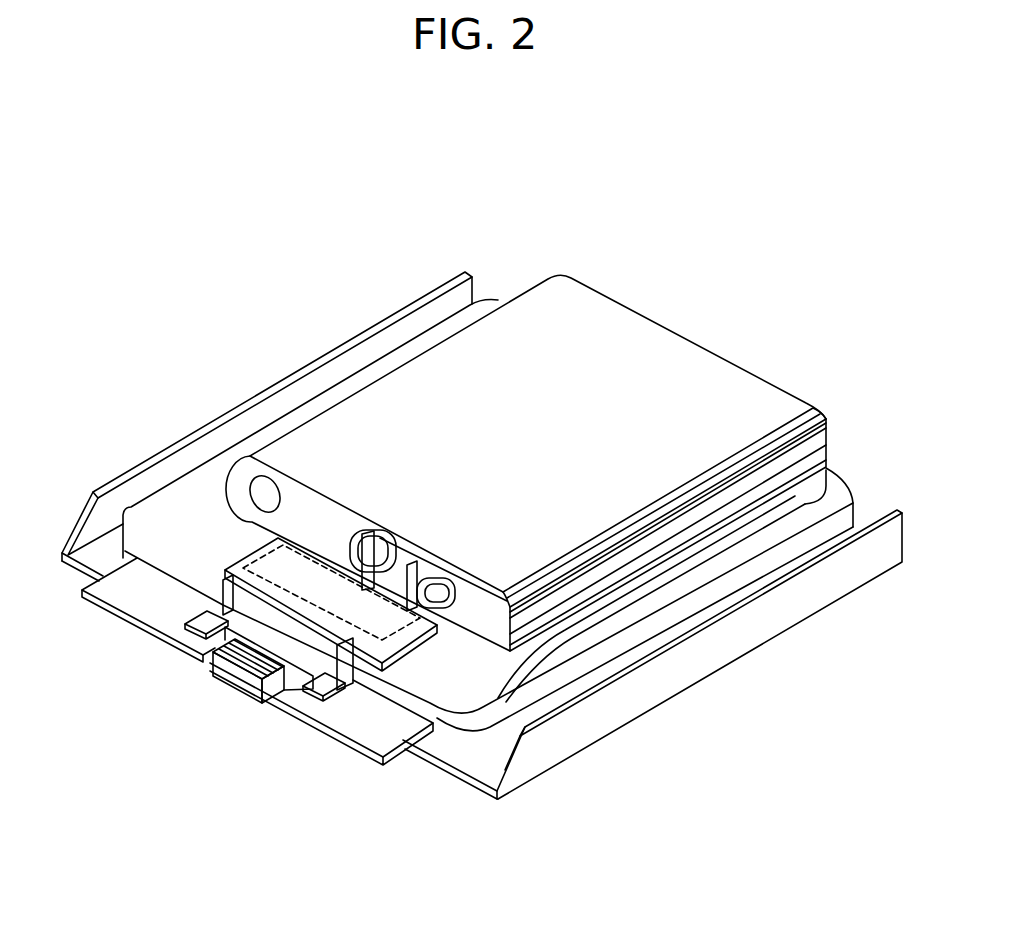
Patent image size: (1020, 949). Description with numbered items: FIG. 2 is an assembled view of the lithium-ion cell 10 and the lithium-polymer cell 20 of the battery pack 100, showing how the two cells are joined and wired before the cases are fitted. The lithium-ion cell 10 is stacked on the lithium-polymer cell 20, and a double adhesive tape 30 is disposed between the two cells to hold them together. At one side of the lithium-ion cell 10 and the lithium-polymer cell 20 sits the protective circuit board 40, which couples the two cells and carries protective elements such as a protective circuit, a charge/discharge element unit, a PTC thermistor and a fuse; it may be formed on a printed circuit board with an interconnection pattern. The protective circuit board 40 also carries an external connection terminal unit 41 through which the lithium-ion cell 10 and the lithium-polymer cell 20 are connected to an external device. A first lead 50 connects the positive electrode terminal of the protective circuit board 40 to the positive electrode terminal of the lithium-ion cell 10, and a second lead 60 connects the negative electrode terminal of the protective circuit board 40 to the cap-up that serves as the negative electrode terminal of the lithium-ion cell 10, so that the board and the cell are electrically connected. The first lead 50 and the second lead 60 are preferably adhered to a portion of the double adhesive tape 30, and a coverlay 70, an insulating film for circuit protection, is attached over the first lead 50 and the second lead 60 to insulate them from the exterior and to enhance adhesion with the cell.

The battery pack 100 is at (268, 308).
The lithium-ion cell 10 is at (588, 297).
The lithium-polymer cell 20 is at (488, 748).
The double adhesive tape 30 is at (450, 692).
The protective circuit board 40 is at (130, 603).
The external connection terminal unit 41 is at (225, 667).
The first lead 50 is at (320, 690).
The second lead 60 is at (206, 624).
The coverlay 70 is at (380, 650).